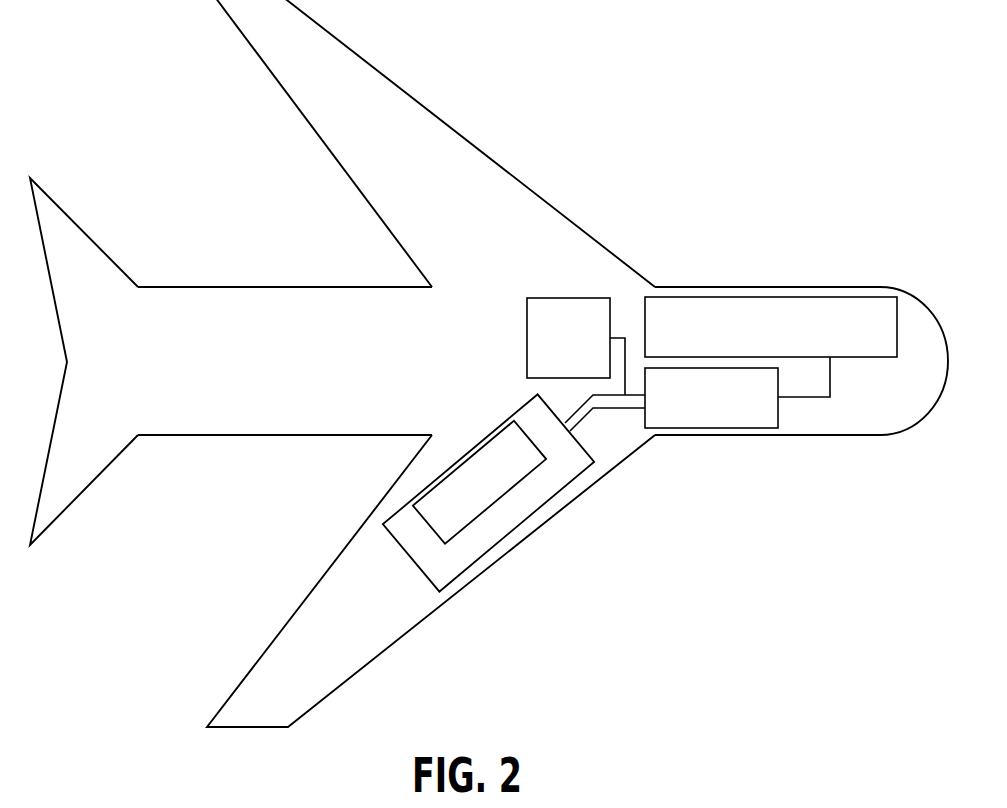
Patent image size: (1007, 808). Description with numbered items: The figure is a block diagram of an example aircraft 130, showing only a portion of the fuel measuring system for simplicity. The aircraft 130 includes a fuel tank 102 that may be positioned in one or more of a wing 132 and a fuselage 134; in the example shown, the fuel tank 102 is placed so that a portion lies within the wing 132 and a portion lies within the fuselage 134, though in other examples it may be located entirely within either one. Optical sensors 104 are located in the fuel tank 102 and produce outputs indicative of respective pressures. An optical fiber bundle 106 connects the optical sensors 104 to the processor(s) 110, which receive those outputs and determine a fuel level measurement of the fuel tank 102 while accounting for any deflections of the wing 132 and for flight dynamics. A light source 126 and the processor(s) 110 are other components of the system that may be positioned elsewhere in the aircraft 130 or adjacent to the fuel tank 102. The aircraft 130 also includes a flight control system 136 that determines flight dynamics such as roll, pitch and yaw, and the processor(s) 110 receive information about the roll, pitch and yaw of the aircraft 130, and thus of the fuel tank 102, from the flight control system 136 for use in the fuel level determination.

The aircraft 130 is at (489, 363).
The wing 132 is at (398, 642).
The fuselage 134 is at (330, 435).
The flight control system 136 is at (755, 351).
The processor(s) 110 is at (726, 421).
The light source 126 is at (553, 376).
The optical fiber bundle 106 is at (586, 412).
The fuel tank 102 is at (488, 492).
The optical sensors 104 is at (479, 482).